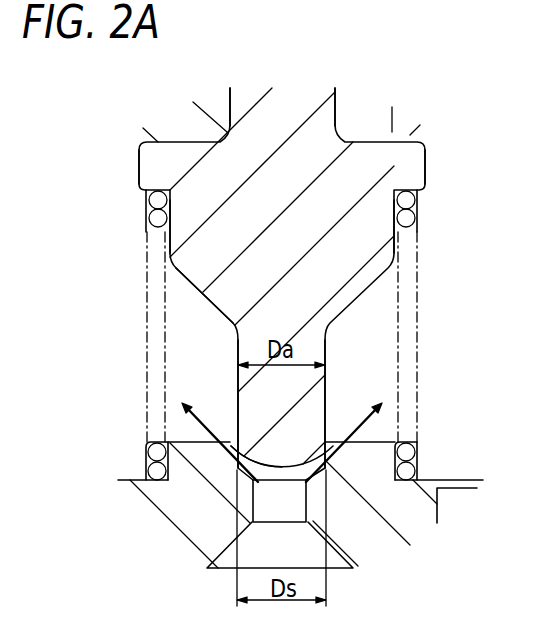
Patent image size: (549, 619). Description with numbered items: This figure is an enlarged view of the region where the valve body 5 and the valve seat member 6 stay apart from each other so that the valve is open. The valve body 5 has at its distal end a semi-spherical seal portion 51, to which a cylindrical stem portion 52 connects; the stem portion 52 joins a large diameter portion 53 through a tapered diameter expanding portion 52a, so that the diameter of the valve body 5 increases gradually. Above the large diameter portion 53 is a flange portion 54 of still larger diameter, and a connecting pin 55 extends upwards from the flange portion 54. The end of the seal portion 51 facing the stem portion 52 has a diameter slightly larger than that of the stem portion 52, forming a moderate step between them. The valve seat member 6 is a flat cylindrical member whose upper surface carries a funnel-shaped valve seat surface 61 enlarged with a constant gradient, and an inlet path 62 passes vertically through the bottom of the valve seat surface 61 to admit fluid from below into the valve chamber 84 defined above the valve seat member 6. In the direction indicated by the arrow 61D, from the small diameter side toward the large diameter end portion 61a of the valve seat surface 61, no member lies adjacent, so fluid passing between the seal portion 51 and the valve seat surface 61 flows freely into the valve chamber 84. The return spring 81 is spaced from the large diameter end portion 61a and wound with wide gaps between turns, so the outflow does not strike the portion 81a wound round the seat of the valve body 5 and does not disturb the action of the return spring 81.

The valve body 5 is at (430, 150).
The valve seat member 6 is at (432, 478).
The seal portion 51 is at (333, 450).
The stem portion 52 is at (308, 386).
The diameter expanding portion 52a is at (202, 280).
The large diameter portion 53 is at (367, 237).
The flange portion 54 is at (407, 171).
The connecting pin 55 is at (322, 112).
The valve seat surface 61 is at (222, 444).
The large diameter end portion 61a is at (233, 446).
The arrow indicating flow direction 61D is at (341, 444).
The inlet path 62 is at (333, 557).
The return spring 81 is at (418, 334).
The portion of the return spring wound round the seat of the valve body 81a is at (413, 217).
The valve chamber 84 is at (128, 258).